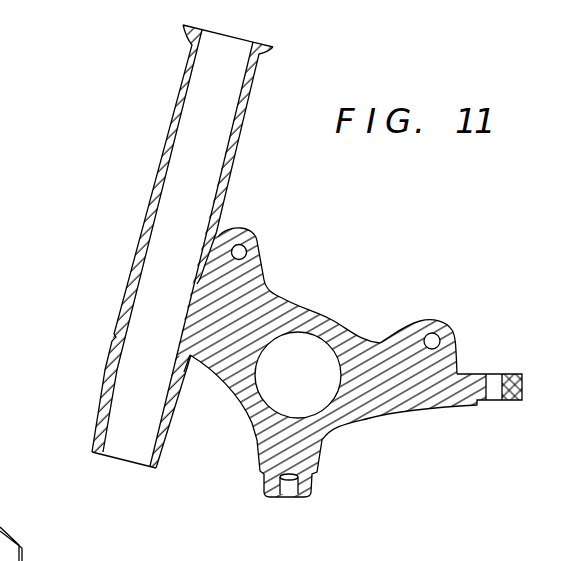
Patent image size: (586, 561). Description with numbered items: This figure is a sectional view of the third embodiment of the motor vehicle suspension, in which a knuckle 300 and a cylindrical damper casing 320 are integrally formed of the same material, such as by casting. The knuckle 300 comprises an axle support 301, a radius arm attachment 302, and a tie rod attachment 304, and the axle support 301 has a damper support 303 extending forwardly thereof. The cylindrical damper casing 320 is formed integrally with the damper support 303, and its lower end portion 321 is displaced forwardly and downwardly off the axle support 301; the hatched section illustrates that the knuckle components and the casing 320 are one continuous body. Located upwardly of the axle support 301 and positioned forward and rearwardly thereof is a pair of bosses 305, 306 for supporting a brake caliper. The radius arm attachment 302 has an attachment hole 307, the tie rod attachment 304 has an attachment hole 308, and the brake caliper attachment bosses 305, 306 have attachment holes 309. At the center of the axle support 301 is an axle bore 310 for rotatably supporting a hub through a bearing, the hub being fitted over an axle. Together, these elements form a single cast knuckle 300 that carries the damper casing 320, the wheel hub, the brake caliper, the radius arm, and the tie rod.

The knuckle 300 is at (308, 238).
The axle support 301 is at (248, 403).
The radius arm attachment 302 is at (310, 487).
The damper support 303 is at (214, 355).
The tie rod attachment 304 is at (523, 392).
The boss 305 is at (240, 228).
The boss 306 is at (432, 320).
The attachment hole 307 is at (290, 490).
The attachment hole 308 is at (495, 395).
The attachment holes 309 is at (239, 252).
The axle bore 310 is at (316, 349).
The cylindrical damper casing 320 is at (157, 185).
The lower end portion 321 is at (94, 440).